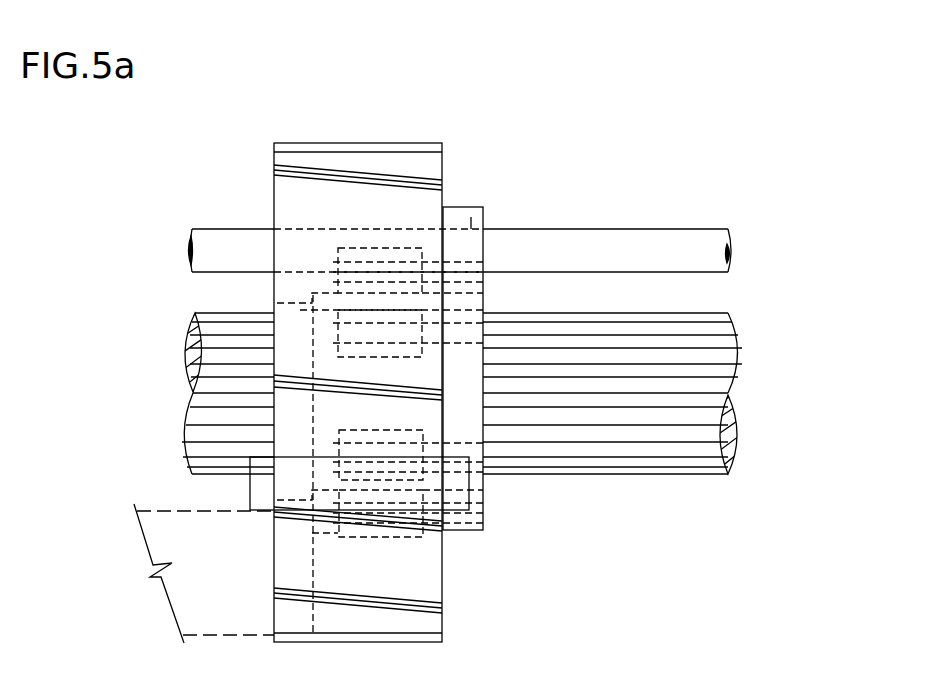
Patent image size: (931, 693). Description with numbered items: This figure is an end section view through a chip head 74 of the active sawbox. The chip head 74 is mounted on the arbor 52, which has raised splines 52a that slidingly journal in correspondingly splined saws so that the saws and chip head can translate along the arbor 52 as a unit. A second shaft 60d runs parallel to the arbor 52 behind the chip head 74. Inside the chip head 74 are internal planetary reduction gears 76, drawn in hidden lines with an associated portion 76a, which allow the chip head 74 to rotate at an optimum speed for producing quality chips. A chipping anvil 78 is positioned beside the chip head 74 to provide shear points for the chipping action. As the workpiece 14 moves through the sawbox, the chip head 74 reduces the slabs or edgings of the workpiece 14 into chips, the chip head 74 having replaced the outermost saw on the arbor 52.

The workpiece 14 is at (165, 522).
The arbor 52 is at (738, 448).
The splines 52a is at (720, 335).
The drive shaft 60d is at (625, 235).
The chip head 74 is at (366, 153).
The internal planetary reduction gears 76 is at (477, 333).
The slot 76a is at (472, 217).
The chipping anvil 78 is at (408, 487).